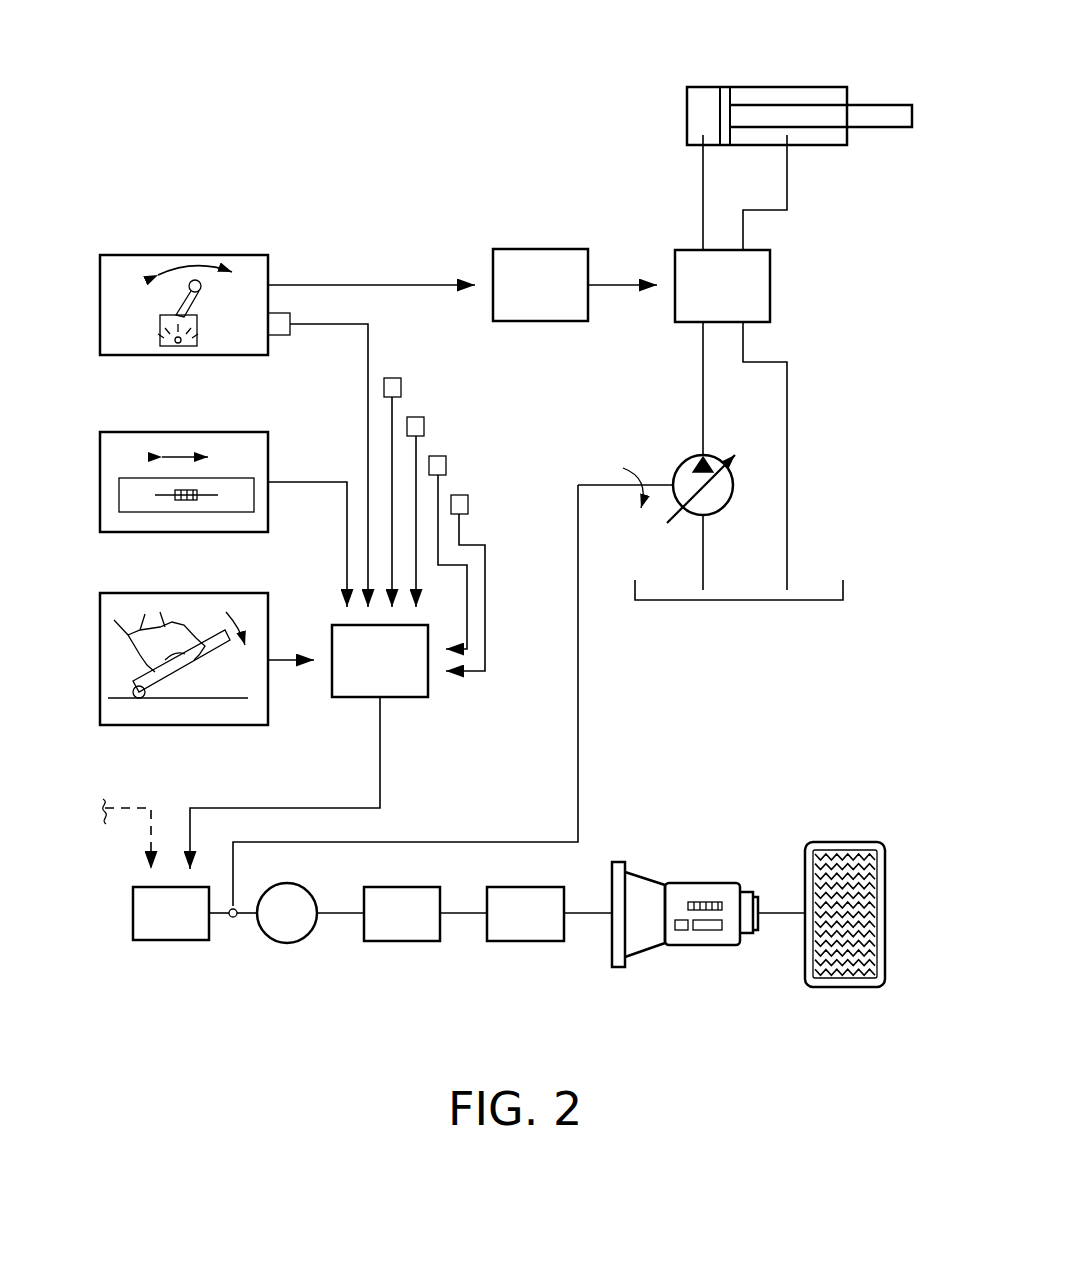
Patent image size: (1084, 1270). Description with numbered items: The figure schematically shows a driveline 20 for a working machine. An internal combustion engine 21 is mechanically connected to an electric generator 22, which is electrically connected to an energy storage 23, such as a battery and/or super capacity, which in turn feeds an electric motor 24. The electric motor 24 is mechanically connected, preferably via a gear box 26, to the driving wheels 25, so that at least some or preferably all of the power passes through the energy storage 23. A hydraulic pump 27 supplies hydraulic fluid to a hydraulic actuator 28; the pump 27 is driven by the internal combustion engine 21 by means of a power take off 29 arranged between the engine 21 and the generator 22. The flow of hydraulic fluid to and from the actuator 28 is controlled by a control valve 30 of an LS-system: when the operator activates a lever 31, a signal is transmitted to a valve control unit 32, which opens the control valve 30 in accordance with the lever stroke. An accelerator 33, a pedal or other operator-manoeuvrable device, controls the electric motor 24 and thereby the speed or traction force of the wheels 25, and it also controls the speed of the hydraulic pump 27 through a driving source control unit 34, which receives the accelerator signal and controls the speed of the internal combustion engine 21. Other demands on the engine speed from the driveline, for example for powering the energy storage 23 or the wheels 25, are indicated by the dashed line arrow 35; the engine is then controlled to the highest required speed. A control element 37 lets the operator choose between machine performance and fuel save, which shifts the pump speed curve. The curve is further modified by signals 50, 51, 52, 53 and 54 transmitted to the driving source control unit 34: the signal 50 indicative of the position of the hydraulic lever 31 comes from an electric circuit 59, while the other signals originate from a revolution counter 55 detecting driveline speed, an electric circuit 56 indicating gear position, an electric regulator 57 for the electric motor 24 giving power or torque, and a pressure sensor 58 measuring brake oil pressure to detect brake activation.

The driveline 20 is at (735, 800).
The internal combustion engine 21 is at (172, 926).
The electric generator 22 is at (287, 926).
The energy storage 23 is at (402, 926).
The electric motor 24 is at (530, 926).
The wheels 25 is at (845, 972).
The gear box 26 is at (698, 937).
The hydraulic pump 27 is at (684, 466).
The hydraulic actuator 28 is at (778, 87).
The power take off 29 is at (453, 842).
The control valve 30 is at (770, 287).
The lever 31 is at (185, 255).
The valve control unit 32 is at (540, 249).
The accelerator 33 is at (188, 593).
The driving source control unit 34 is at (355, 698).
The dashed line arrow 35 is at (124, 806).
The control element 37 is at (186, 432).
The signal 50 is at (367, 440).
The signal 51 is at (392, 412).
The signal 52 is at (416, 452).
The signal 53 is at (438, 492).
The signal 54 is at (459, 530).
The revolution counter 55 is at (401, 386).
The electric circuit 56 is at (424, 426).
The electric regulator 57 is at (446, 465).
The pressure sensor 58 is at (468, 505).
The electric circuit 59 is at (283, 336).